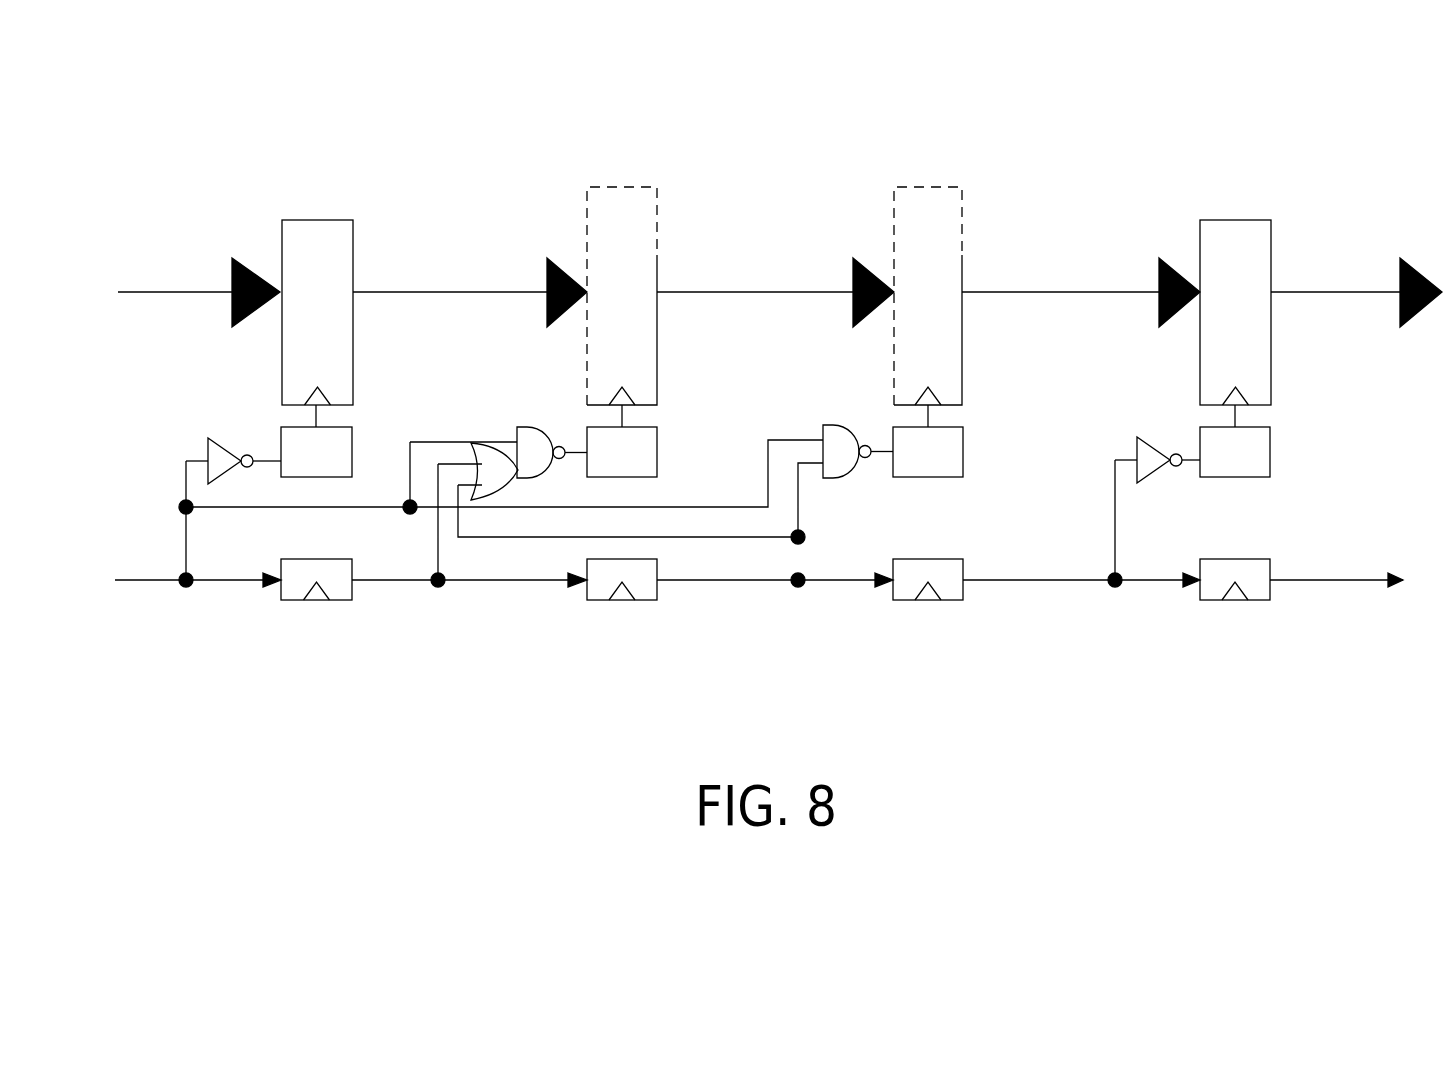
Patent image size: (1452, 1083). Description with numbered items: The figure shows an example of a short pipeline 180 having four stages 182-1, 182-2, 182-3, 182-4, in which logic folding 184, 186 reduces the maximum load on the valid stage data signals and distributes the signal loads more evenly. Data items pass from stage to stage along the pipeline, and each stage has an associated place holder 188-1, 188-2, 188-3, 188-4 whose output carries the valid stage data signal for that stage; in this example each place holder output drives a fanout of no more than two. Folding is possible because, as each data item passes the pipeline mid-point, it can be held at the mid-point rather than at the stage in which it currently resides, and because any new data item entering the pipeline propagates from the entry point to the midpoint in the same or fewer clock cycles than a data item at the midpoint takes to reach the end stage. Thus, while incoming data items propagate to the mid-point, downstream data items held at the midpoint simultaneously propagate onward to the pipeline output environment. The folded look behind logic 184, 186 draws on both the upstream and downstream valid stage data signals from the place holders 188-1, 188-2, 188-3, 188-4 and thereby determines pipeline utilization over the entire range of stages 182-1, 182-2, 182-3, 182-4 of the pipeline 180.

The short pipeline 180 is at (778, 458).
The pipeline stage 182-1 is at (316, 218).
The pipeline stage 182-2 is at (623, 219).
The pipeline stage 182-3 is at (928, 219).
The pipeline stage 182-4 is at (1234, 218).
The logic folding 184 is at (535, 407).
The logic folding 186 is at (865, 412).
The place holder 188-1 is at (345, 601).
The place holder 188-2 is at (648, 601).
The place holder 188-3 is at (955, 601).
The place holder 188-4 is at (1258, 601).